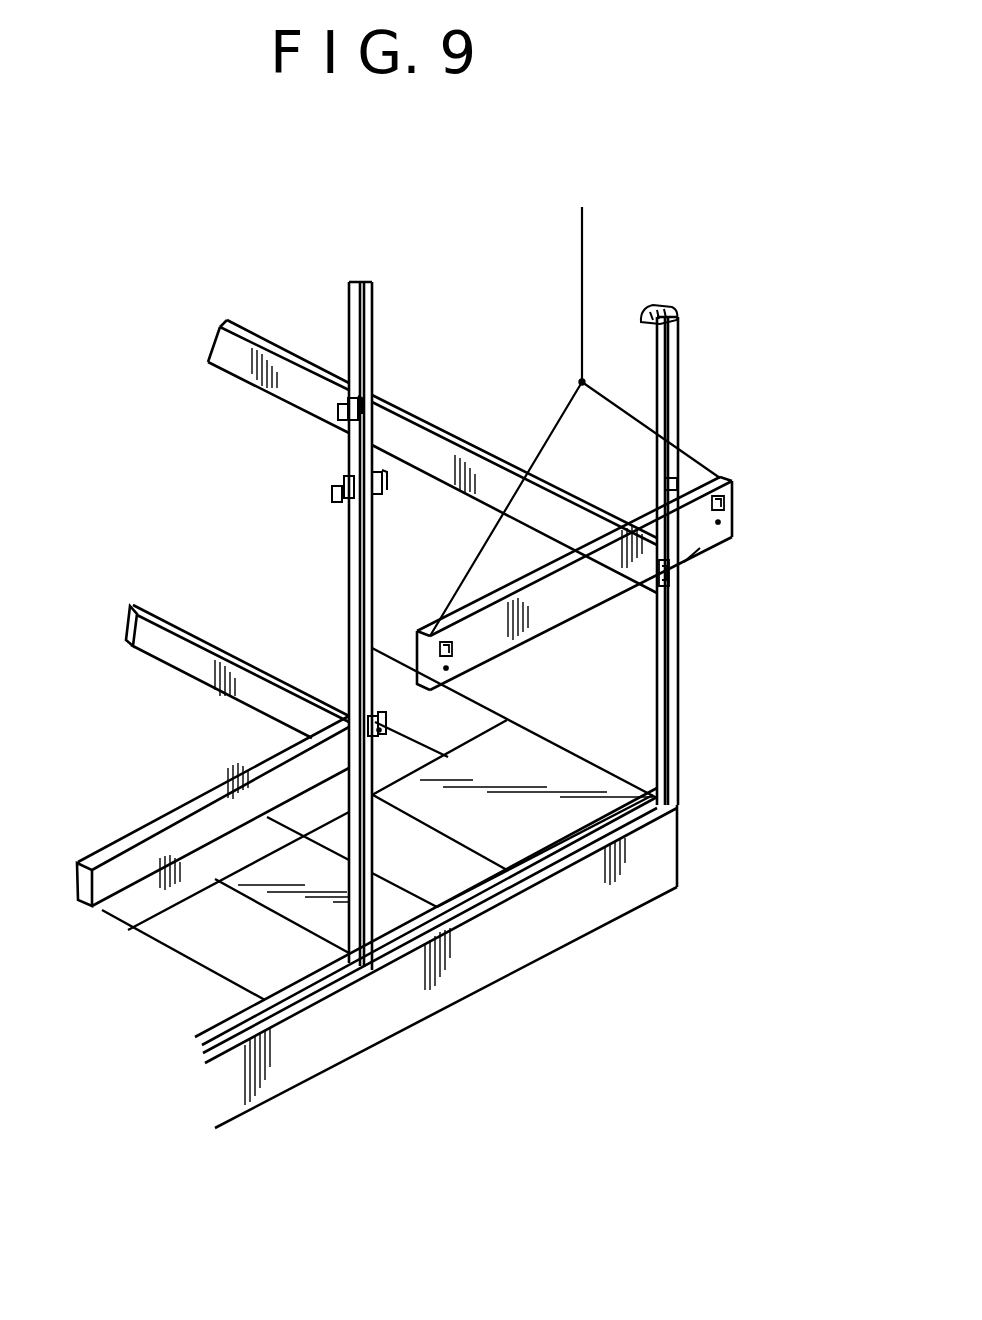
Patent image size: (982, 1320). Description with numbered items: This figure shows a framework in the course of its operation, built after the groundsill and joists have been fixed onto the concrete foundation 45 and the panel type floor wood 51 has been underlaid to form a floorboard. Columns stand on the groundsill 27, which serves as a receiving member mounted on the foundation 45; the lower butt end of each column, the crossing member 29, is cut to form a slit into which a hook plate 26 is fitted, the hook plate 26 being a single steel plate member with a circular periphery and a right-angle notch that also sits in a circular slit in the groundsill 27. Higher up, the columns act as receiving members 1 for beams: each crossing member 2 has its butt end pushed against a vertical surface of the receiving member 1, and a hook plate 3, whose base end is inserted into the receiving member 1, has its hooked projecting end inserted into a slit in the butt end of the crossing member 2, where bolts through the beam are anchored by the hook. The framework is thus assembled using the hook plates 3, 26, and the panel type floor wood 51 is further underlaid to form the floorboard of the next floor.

The receiving member (column) 1 is at (568, 674).
The crossing member (column) 29 is at (681, 397).
The crossing member 2 is at (404, 671).
The receiving member (groundsill) 27 is at (700, 524).
The hook plate 3 is at (340, 412).
The hook plate 26 is at (655, 312).
The concrete foundation 45 is at (663, 843).
The panel type floor wood 51 is at (570, 762).